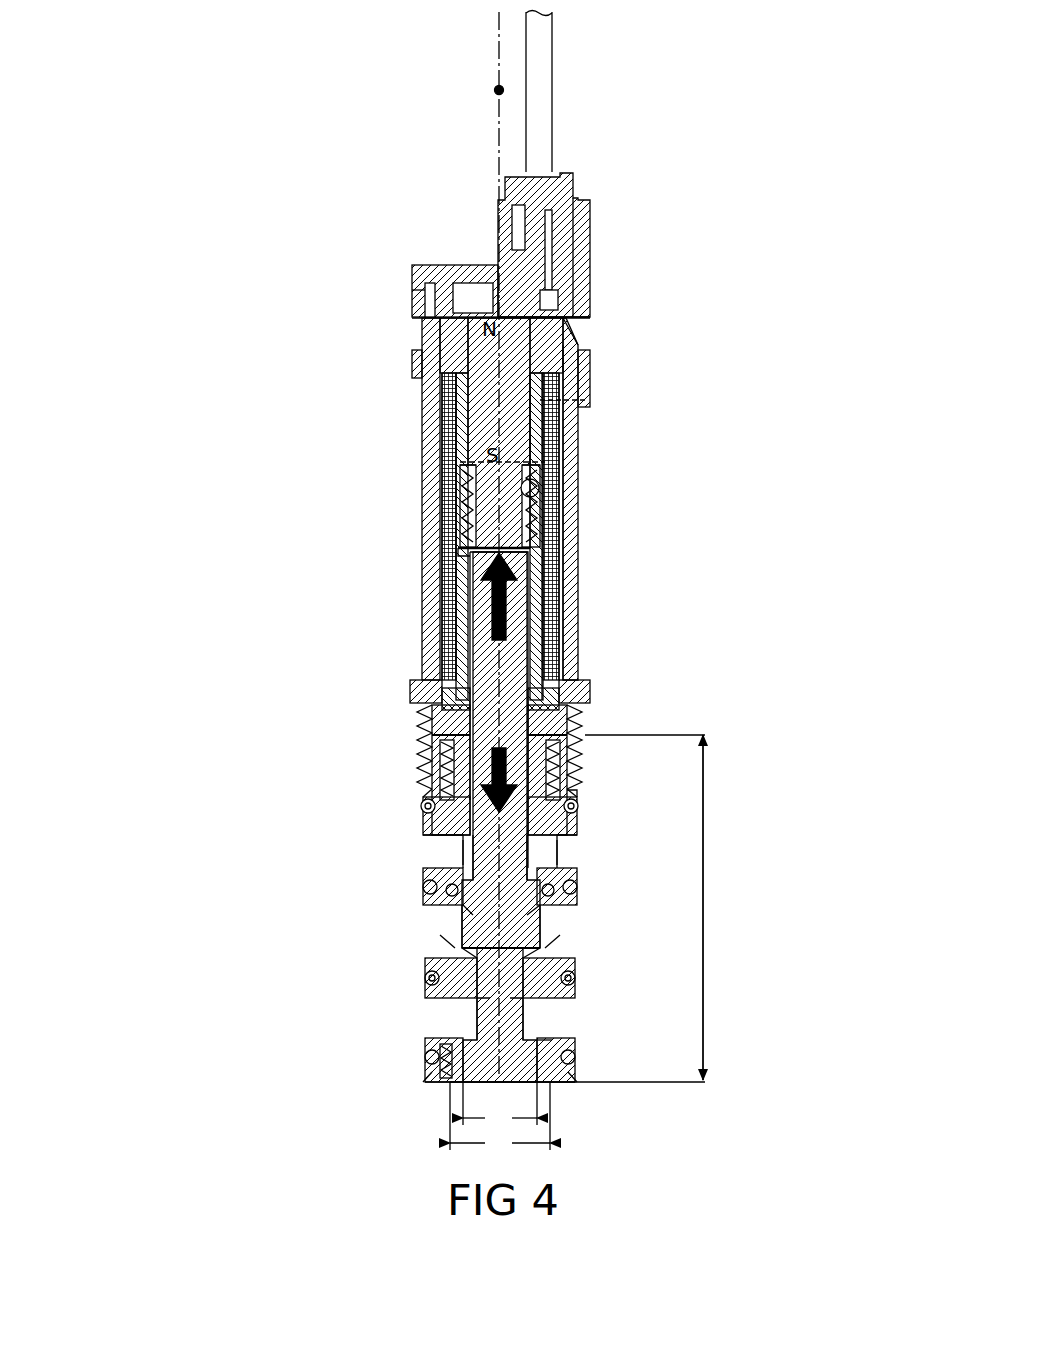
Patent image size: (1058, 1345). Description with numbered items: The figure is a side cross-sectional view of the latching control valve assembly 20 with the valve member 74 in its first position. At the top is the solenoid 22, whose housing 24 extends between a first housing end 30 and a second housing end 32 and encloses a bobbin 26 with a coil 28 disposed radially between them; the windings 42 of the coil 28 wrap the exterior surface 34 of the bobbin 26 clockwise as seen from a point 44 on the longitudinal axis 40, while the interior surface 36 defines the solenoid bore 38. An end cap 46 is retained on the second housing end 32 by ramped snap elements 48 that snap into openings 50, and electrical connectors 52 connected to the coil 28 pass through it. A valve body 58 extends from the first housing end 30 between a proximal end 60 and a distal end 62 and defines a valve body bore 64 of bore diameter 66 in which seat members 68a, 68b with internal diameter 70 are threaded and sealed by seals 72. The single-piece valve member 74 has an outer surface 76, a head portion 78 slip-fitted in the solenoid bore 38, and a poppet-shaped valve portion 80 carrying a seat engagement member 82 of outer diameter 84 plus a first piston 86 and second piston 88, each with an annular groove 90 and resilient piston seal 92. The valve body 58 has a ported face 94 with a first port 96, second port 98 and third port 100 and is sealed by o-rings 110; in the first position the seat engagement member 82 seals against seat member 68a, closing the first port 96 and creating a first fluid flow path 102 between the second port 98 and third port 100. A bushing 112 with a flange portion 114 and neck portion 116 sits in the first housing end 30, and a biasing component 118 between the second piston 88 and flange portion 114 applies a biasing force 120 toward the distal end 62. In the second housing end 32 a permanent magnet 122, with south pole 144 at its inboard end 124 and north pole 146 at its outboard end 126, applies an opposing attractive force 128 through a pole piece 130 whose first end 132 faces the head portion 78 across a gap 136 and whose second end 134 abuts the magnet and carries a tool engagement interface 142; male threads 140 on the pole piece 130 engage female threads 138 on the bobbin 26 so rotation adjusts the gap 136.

The latching control valve assembly 20 is at (316, 470).
The solenoid 22 is at (598, 546).
The housing 24 is at (470, 549).
The bobbin 26 is at (542, 595).
The coil 28 is at (562, 384).
The first housing end 30 is at (594, 763).
The second housing end 32 is at (598, 352).
The exterior surface 34 is at (425, 701).
The interior surface 36 is at (486, 393).
The solenoid bore 38 is at (548, 527).
The longitudinal axis 40 is at (497, 41).
The windings 42 is at (448, 452).
The point 44 is at (484, 90).
The end cap 46 is at (441, 270).
The snap elements 48 is at (428, 333).
The openings 50 is at (600, 322).
The electrical connectors 52 is at (590, 185).
The valve body 58 is at (576, 802).
The proximal end 60 is at (406, 796).
The distal end 62 is at (432, 1094).
The valve body bore 64 is at (532, 842).
The bore diameter 66 is at (500, 1142).
The seat member 68a is at (576, 975).
The seat member 68b is at (542, 918).
The internal diameter 70 is at (500, 1117).
The seals 72 is at (452, 832).
The valve member 74 is at (534, 872).
The outer surface 76 is at (548, 1066).
The head portion 78 is at (570, 628).
The valve portion 80 is at (536, 1010).
The seat engagement member 82 is at (538, 944).
The outer diameter 84 is at (536, 963).
The first piston 86 is at (552, 1043).
The second piston 88 is at (578, 812).
The annular groove 90 is at (448, 765).
The resilient piston seal 92 is at (425, 793).
The ported face 94 is at (424, 900).
The first port 96 is at (462, 1018).
The second port 98 is at (442, 936).
The third port 100 is at (466, 855).
The first fluid flow path 102 is at (462, 921).
The o-rings 110 is at (427, 809).
The bushing 112 is at (582, 668).
The flange portion 114 is at (584, 722).
The neck portion 116 is at (556, 568).
The biasing component 118 is at (434, 738).
The biasing force 120 is at (580, 756).
The permanent magnet 122 is at (590, 330).
The inboard end 124 is at (563, 406).
The outboard end 126 is at (560, 300).
The attractive force 128 is at (448, 601).
The pole piece 130 is at (566, 452).
The first end 132 is at (466, 522).
The second end 134 is at (452, 486).
The gap 136 is at (456, 556).
The female threads 138 is at (568, 507).
The male threads 140 is at (540, 486).
The tool engagement interface 142 is at (588, 422).
The south pole 144 is at (462, 458).
The north pole 146 is at (422, 290).